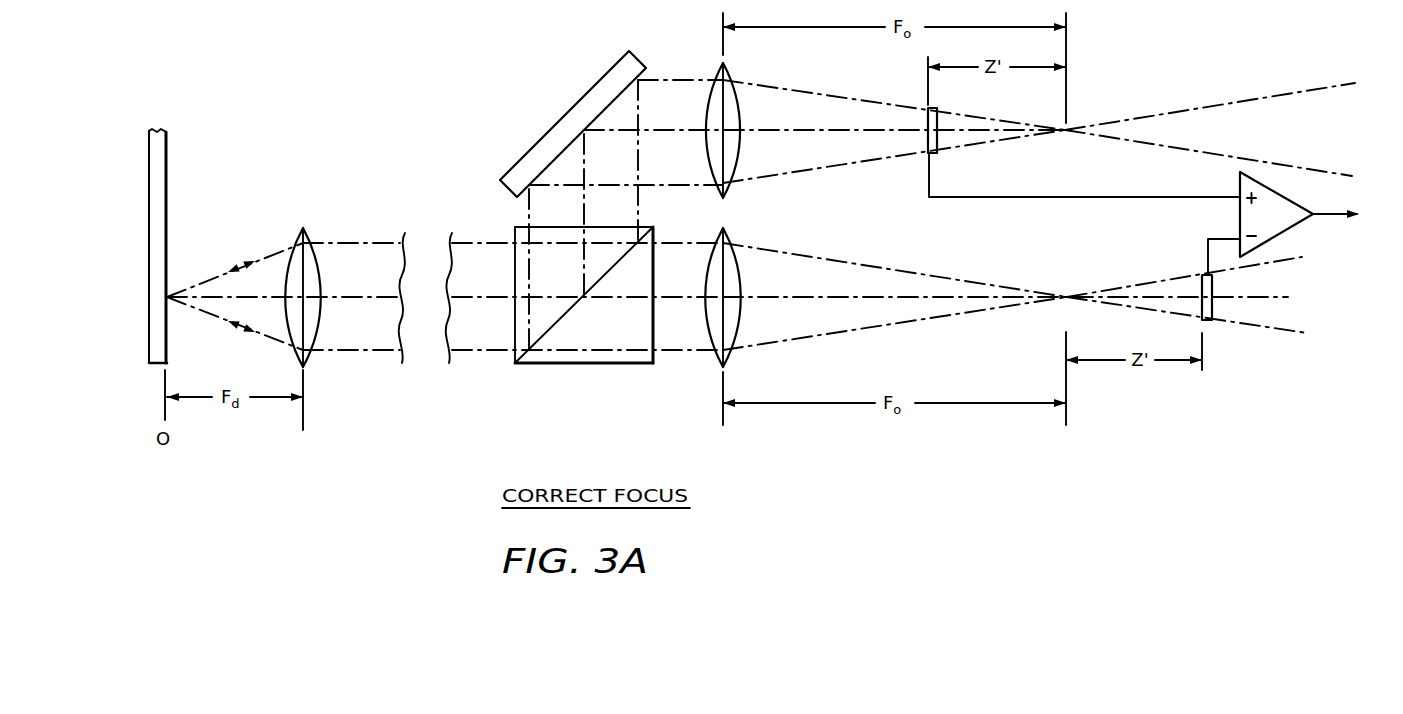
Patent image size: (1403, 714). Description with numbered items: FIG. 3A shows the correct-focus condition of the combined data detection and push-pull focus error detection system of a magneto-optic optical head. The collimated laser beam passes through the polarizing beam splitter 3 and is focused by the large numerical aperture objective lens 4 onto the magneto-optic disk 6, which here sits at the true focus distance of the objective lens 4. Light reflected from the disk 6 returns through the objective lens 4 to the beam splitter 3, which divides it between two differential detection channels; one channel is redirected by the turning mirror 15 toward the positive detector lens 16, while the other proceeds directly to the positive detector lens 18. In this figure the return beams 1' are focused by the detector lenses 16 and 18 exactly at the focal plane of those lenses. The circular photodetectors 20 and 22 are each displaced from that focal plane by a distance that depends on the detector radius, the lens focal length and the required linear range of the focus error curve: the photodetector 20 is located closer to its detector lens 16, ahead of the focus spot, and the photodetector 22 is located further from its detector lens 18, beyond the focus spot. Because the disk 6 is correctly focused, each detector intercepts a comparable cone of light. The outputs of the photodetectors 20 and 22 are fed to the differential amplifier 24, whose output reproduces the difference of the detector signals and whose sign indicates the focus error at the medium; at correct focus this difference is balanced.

The return beam 1' is at (761, 212).
The polarizing beam splitter 3 is at (654, 360).
The objective lens 4 is at (320, 340).
The magneto-optic disk 6 is at (181, 206).
The turning mirror 15 is at (562, 118).
The detector lens 16 is at (741, 118).
The detector lens 18 is at (741, 276).
The photodetector 20 is at (939, 126).
The photodetector 22 is at (1213, 305).
The differential amplifier 24 is at (1290, 232).